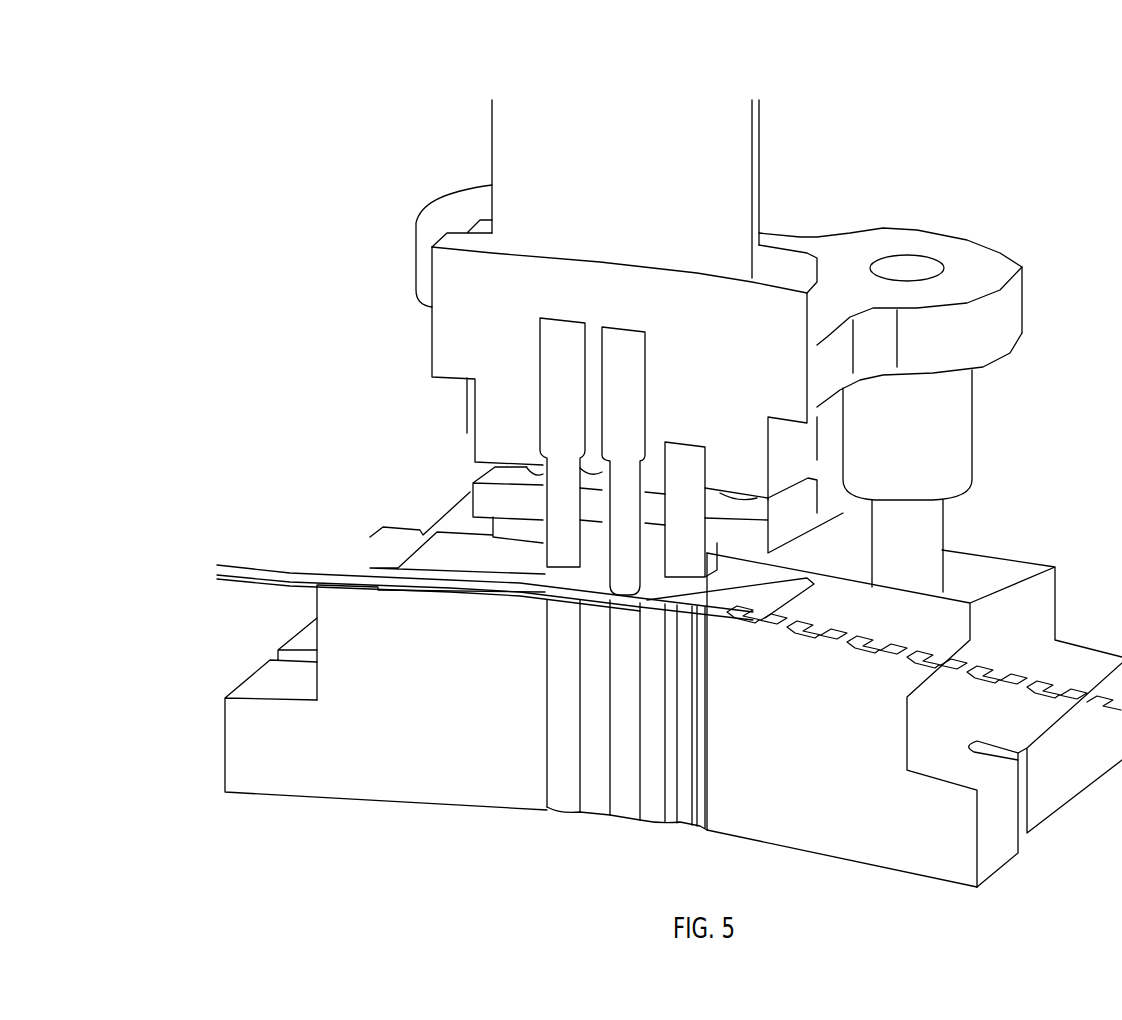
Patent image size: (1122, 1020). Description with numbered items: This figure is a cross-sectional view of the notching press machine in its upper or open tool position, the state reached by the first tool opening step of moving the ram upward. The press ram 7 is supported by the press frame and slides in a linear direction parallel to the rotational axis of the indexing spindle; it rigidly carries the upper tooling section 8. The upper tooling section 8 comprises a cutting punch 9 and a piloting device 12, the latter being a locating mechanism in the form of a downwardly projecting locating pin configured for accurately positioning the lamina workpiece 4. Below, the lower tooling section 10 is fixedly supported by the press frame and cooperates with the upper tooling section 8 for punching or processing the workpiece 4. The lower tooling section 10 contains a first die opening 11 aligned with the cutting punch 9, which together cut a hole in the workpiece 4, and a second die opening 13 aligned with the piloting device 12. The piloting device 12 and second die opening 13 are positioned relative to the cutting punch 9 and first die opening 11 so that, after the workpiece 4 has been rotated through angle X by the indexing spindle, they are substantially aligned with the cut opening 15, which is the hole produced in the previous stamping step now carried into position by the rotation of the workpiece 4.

The workpiece 4 is at (298, 565).
The press ram 7 is at (492, 155).
The upper tooling section 8 is at (432, 355).
The cutting punch 9 is at (543, 533).
The lower tooling section 10 is at (240, 672).
The first die opening 11 is at (547, 773).
The piloting device 12 is at (628, 572).
The second die opening 13 is at (642, 795).
The cut opening 15 is at (640, 604).